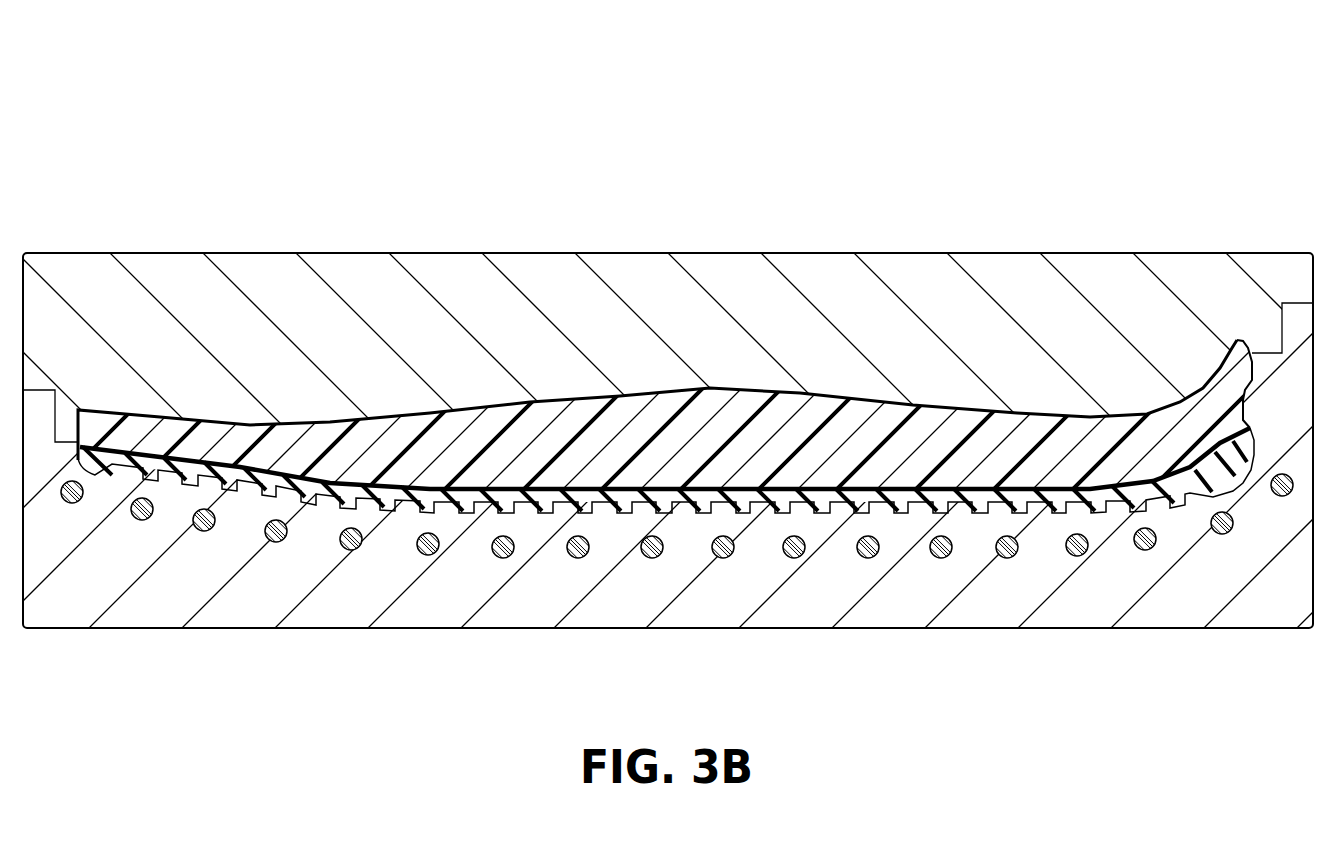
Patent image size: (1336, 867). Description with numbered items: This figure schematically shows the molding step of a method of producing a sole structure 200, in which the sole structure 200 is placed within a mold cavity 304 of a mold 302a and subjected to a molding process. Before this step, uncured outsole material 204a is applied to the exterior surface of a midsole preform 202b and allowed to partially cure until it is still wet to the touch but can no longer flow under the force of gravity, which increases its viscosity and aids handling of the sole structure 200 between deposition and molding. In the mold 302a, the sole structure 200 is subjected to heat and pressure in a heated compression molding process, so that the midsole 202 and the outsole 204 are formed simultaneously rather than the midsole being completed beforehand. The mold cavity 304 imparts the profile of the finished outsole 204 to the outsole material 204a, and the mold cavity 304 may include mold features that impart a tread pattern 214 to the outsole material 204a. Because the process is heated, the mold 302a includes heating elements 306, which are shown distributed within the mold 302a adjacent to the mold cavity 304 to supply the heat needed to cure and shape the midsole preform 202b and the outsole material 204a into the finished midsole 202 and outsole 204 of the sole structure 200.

The mold 302a is at (668, 401).
The sole structure 200 is at (668, 437).
The midsole 202 is at (668, 346).
The midsole preform 202b is at (385, 445).
The mold cavity 304 is at (478, 440).
The outsole 204 is at (666, 585).
The outsole material 204a is at (666, 585).
The tread pattern 214 is at (328, 486).
The heating elements 306 is at (869, 559).